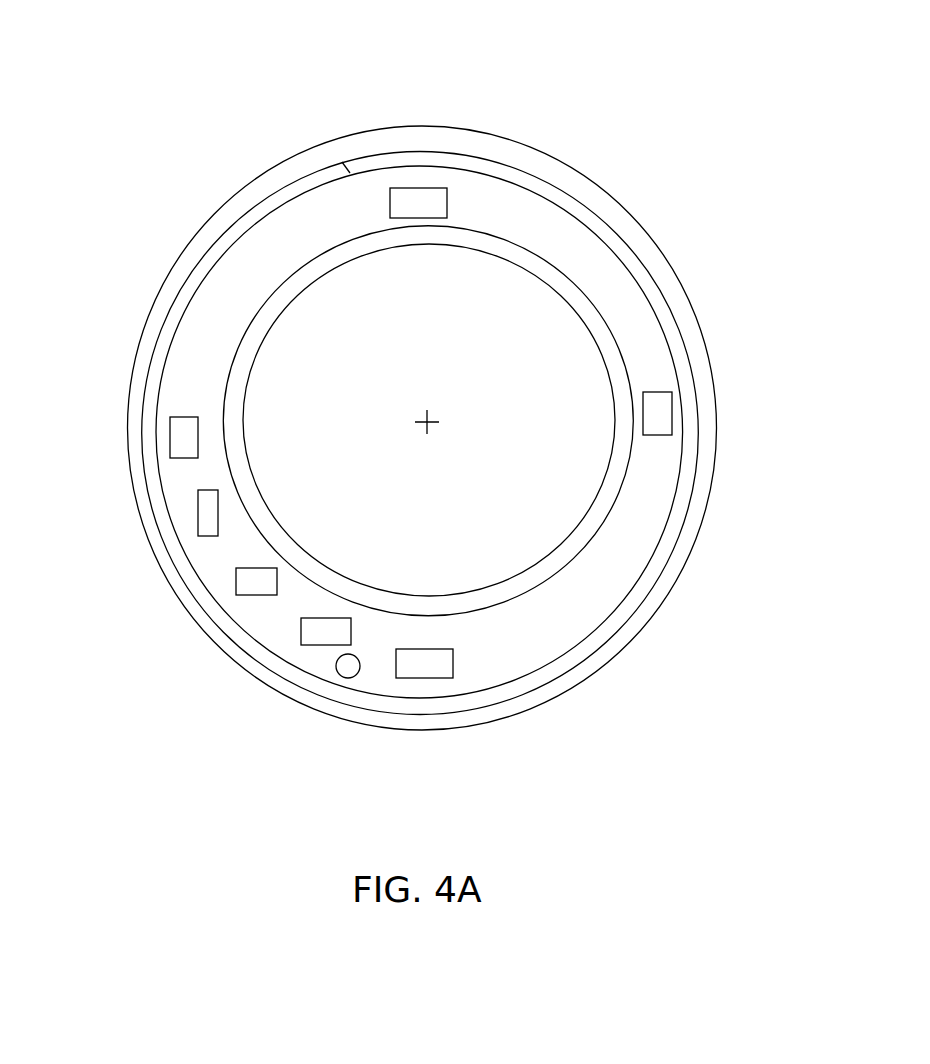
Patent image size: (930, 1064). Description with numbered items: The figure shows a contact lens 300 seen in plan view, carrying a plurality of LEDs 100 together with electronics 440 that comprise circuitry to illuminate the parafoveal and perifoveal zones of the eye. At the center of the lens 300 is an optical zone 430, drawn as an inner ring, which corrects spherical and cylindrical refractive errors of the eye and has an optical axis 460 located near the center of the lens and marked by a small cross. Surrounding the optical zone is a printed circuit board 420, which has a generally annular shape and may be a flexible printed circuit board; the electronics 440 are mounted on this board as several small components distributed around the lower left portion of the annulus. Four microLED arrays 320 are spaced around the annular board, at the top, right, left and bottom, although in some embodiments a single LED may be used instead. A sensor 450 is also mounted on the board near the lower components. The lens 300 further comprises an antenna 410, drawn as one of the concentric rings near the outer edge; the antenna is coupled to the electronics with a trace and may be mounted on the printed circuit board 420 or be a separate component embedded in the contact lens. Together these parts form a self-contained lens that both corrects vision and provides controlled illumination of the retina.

The LEDs 100 is at (699, 427).
The contact lens 300 is at (248, 142).
The microLED array 320 is at (420, 188).
The antenna 410 is at (203, 262).
The printed circuit board 420 is at (195, 338).
The optical zone 430 is at (272, 479).
The electronics 440 is at (207, 536).
The sensor 450 is at (350, 678).
The optical axis 460 is at (430, 415).